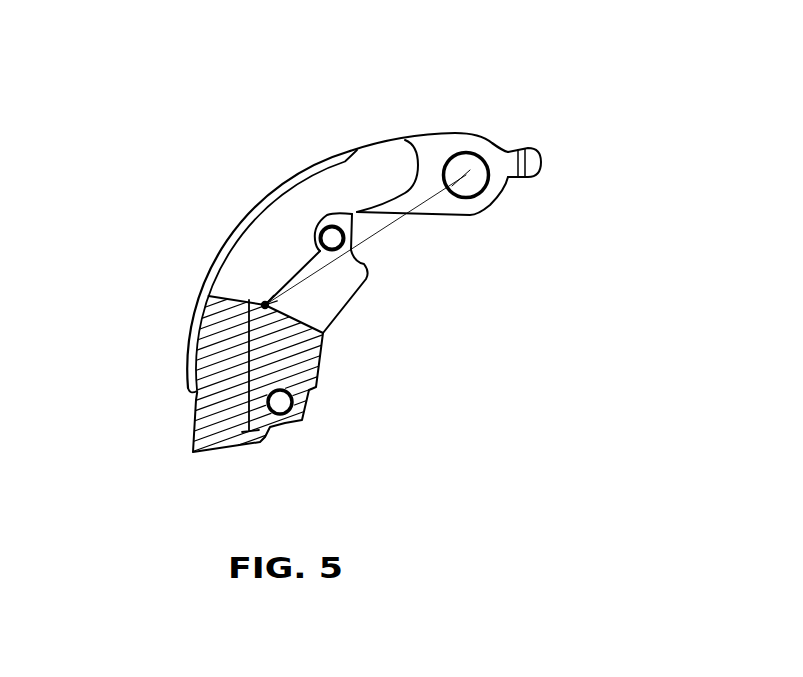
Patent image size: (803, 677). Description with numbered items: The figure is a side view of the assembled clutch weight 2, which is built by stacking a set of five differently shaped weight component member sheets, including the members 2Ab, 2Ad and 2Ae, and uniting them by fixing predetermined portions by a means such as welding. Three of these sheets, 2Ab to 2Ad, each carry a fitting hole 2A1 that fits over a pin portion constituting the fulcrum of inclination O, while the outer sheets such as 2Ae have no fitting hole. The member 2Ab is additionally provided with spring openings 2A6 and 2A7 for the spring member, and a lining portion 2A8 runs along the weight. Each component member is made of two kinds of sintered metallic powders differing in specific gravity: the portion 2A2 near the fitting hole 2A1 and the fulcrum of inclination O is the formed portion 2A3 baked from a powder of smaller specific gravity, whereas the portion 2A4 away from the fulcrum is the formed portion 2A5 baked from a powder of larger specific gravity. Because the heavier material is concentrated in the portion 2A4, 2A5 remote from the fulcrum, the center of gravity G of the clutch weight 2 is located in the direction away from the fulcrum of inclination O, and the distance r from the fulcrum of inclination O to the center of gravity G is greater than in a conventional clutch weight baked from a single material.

The clutch weight 2 is at (210, 121).
The fitting hole 2A1 is at (472, 187).
The portion near the fulcrum of inclination 2A2 is at (375, 173).
The formed portion 2A3 is at (330, 192).
The portion away from the fulcrum of inclination 2A4 is at (188, 363).
The formed portion 2A5 is at (192, 410).
The spring opening 2A6 is at (327, 328).
The spring opening 2A7 is at (293, 407).
The lining portion 2A8 is at (248, 218).
The weight component member 2Ab is at (345, 232).
The weight component member 2Ad is at (317, 298).
The weight component member 2Ae is at (230, 274).
The fulcrum of inclination O is at (462, 178).
The center of gravity G is at (264, 304).
The distance from the fulcrum of inclination to the center of gravity r is at (365, 240).